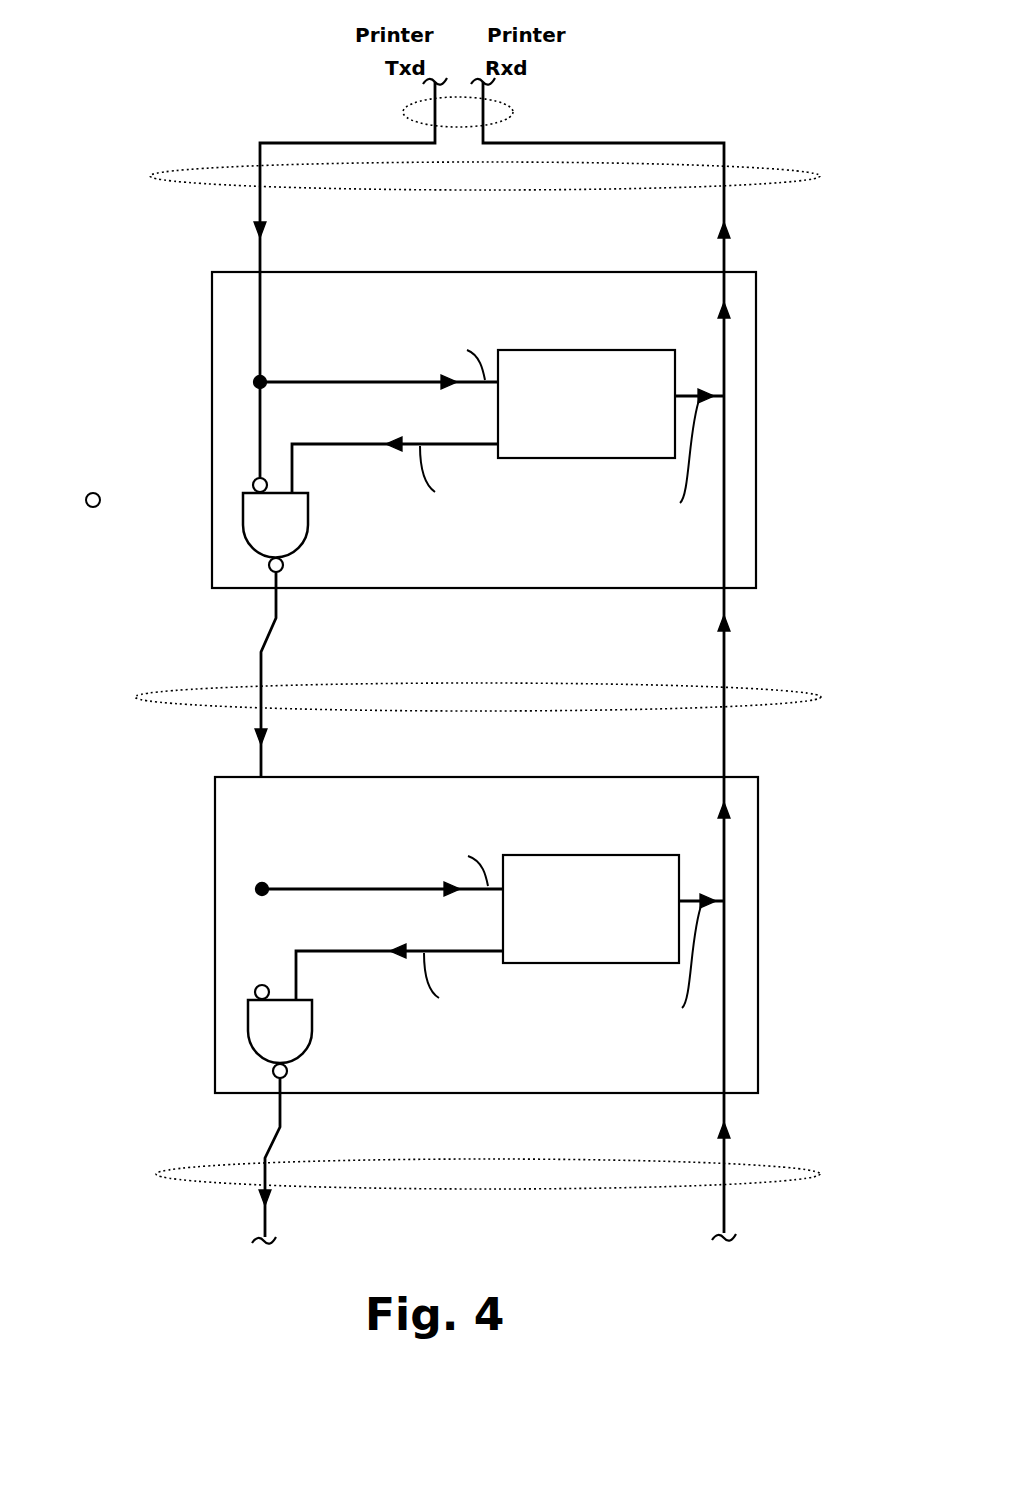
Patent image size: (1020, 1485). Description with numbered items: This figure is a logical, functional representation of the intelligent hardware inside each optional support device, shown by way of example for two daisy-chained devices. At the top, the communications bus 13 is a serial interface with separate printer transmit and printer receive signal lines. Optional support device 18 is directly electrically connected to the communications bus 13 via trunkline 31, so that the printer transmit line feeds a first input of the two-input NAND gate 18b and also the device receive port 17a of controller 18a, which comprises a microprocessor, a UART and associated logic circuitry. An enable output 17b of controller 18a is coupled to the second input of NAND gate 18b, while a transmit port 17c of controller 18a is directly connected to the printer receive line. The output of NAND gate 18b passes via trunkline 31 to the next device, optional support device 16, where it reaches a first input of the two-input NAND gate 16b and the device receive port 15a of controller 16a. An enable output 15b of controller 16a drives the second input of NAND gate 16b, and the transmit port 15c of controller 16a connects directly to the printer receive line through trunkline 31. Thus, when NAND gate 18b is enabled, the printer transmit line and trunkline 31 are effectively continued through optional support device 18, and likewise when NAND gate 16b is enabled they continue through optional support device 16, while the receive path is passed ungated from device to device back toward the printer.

The communications bus 13 is at (403, 112).
The trunkline 31 is at (150, 176).
The optional support device 18 is at (228, 335).
The controller 18a is at (547, 365).
The NAND gate 18b is at (290, 540).
The device receive port 17a is at (322, 382).
The enable output 17b is at (323, 447).
The transmit port 17c is at (708, 395).
The optional support device 16 is at (231, 841).
The controller 16a is at (552, 871).
The NAND gate 16b is at (294, 1046).
The device receive port 15a is at (325, 889).
The enable output 15b is at (327, 954).
The transmit port 15c is at (710, 900).